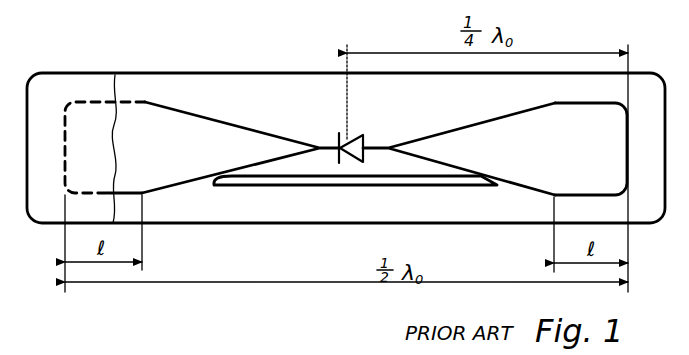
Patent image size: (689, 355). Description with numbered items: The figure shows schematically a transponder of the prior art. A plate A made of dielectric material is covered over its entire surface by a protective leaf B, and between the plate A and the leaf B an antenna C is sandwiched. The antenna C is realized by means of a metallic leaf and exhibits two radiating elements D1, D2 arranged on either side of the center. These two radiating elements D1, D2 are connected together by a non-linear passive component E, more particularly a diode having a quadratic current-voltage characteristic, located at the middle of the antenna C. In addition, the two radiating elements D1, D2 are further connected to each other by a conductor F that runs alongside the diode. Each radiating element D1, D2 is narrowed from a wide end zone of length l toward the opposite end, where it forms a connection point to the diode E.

The plate A is at (177, 234).
The protective leaf B is at (58, 93).
The antenna C is at (201, 110).
The radiating element D1 is at (201, 169).
The radiating element D2 is at (531, 174).
The non-linear passive component E is at (356, 126).
The conductor F is at (346, 180).